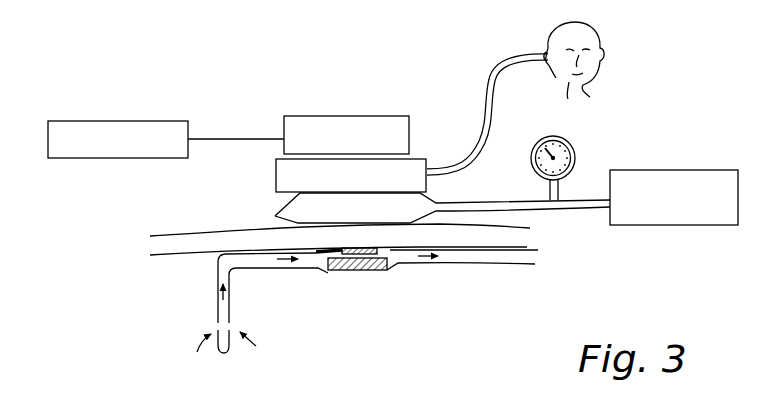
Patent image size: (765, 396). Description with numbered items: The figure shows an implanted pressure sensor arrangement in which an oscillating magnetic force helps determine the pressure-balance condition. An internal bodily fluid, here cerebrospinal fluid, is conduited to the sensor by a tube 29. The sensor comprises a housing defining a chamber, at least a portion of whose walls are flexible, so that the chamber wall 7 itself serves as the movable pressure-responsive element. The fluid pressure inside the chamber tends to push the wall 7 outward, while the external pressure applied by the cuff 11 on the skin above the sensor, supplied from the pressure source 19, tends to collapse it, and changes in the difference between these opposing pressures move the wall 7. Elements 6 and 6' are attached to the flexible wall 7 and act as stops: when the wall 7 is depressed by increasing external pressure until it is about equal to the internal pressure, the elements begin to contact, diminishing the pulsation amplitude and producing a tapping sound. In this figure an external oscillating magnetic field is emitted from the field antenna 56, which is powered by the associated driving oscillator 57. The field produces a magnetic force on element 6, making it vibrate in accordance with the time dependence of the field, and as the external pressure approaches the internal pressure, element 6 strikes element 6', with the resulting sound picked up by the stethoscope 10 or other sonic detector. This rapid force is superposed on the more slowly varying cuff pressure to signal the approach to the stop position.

The driving oscillator 57 is at (105, 121).
The field antenna 56 is at (339, 116).
The stethoscope 10 is at (276, 178).
The cuff 11 is at (274, 210).
The pressure source 19 is at (674, 184).
The tube 29 is at (218, 294).
The chamber wall 7 is at (340, 248).
The element 6 is at (372, 240).
The element 6' is at (375, 292).